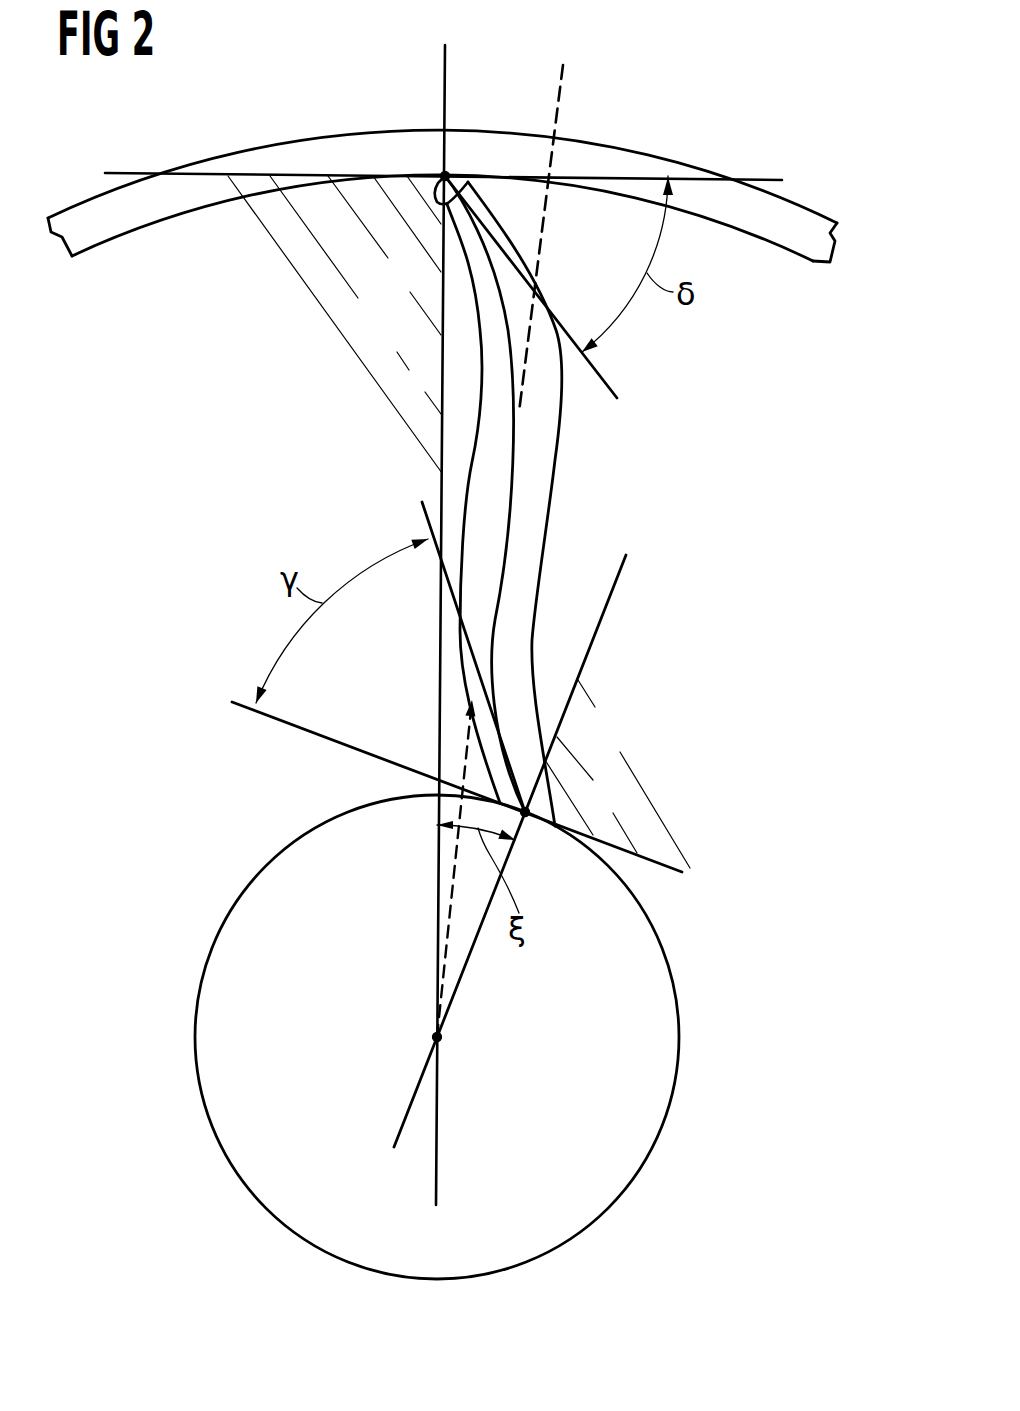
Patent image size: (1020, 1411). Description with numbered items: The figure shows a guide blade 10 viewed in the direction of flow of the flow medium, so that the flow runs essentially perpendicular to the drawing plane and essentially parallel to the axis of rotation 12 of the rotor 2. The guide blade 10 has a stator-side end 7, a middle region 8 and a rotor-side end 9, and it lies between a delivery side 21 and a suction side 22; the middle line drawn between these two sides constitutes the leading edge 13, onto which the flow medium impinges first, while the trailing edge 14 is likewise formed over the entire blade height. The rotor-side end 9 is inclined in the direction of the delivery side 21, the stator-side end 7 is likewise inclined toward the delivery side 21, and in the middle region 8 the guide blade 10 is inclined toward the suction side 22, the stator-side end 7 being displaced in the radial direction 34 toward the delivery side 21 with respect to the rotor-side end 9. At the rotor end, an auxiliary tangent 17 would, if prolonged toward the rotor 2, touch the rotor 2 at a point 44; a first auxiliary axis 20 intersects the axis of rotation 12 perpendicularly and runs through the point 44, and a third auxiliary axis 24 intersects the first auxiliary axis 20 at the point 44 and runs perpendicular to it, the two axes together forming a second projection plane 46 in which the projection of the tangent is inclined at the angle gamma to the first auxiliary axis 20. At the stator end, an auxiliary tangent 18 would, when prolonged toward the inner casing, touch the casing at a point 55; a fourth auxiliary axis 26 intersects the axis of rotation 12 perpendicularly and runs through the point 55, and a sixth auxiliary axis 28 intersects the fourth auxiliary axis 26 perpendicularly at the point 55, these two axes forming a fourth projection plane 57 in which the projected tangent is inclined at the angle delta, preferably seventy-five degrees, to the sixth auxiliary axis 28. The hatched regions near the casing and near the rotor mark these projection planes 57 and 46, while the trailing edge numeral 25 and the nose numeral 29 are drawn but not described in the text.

The rotor 2 is at (655, 1000).
The stator-side end 7 is at (502, 451).
The middle region 8 is at (483, 487).
The rotor-side end 9 is at (523, 743).
The guide blade 10 is at (520, 603).
The axis of rotation 12 is at (436, 1036).
The leading edge 13 is at (513, 467).
The trailing edge 14 is at (442, 503).
The auxiliary tangent 17 is at (423, 517).
The auxiliary tangent 18 is at (613, 381).
The first auxiliary axis 20 is at (605, 607).
The delivery side 21 is at (181, 505).
The suction side 22 is at (758, 511).
The third auxiliary axis 24 is at (653, 858).
The trailing edge 25 is at (543, 805).
The fourth auxiliary axis 26 is at (441, 333).
The sixth auxiliary axis 28 is at (683, 174).
The leading edge nose 29 is at (485, 197).
The radial direction 34 is at (563, 93).
The point 44 is at (527, 818).
The second projection plane 46 is at (650, 793).
The point 55 is at (443, 173).
The fourth projection plane 57 is at (283, 263).